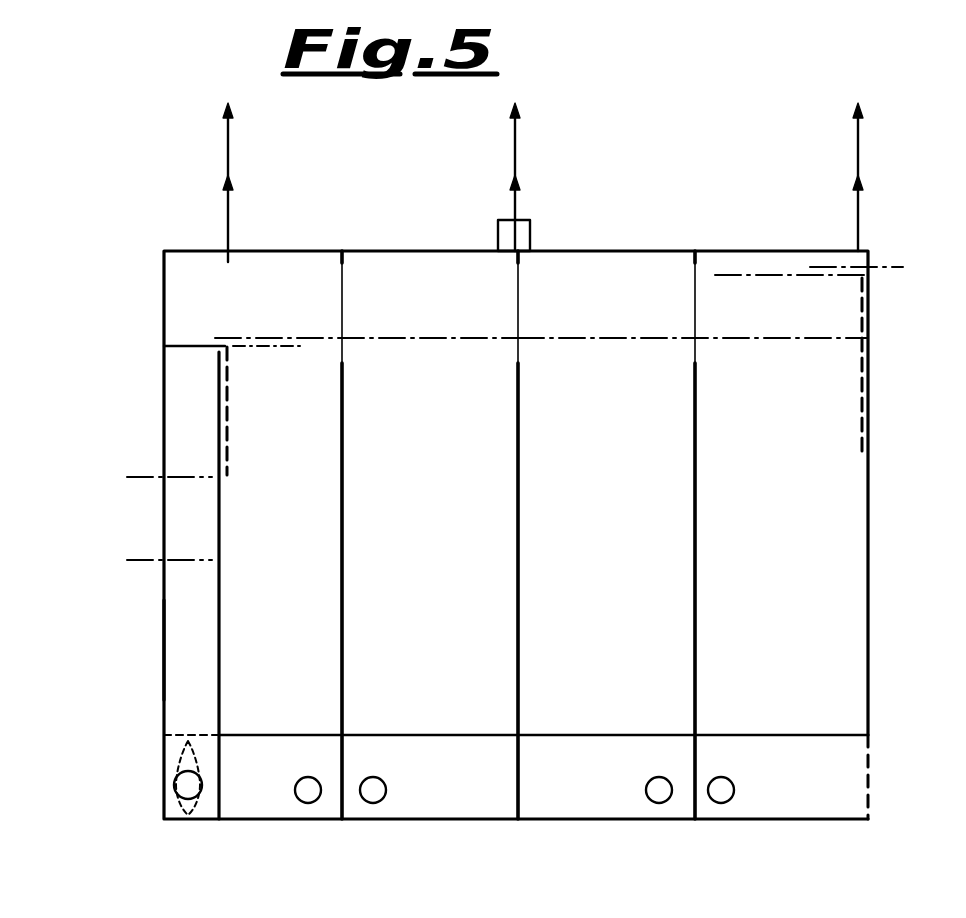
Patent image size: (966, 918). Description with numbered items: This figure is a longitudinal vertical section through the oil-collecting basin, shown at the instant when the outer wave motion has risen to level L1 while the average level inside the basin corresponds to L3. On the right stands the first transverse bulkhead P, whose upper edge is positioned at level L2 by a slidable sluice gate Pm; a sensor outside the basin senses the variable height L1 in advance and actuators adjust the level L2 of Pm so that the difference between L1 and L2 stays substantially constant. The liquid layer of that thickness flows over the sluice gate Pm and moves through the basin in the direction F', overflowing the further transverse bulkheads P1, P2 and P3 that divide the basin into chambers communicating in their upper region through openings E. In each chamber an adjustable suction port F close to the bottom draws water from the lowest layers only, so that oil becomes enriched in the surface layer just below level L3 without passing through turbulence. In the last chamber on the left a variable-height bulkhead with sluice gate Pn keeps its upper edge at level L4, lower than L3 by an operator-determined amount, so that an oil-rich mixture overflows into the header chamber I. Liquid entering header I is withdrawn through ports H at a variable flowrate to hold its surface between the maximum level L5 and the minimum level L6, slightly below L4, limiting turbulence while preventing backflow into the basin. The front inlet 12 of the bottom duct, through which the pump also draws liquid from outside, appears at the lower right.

The transverse bulkhead P is at (870, 533).
The front inlet 12 is at (872, 778).
The flow direction F' is at (627, 157).
The transverse bulkhead P1 is at (697, 592).
The transverse bulkhead P2 is at (520, 630).
The transverse bulkhead P3 is at (345, 590).
The opening E is at (345, 330).
The sluice gate Pn is at (228, 372).
The sluice gate Pm is at (866, 330).
The outer liquid level L1 is at (884, 258).
The sluice gate level L2 is at (741, 266).
The average basin level L3 is at (657, 330).
The sluice gate edge level L4 is at (307, 330).
The maximum header level L5 is at (136, 470).
The minimum header level L6 is at (140, 554).
The header chamber I is at (183, 632).
The ports H is at (182, 783).
The suction port F is at (517, 776).